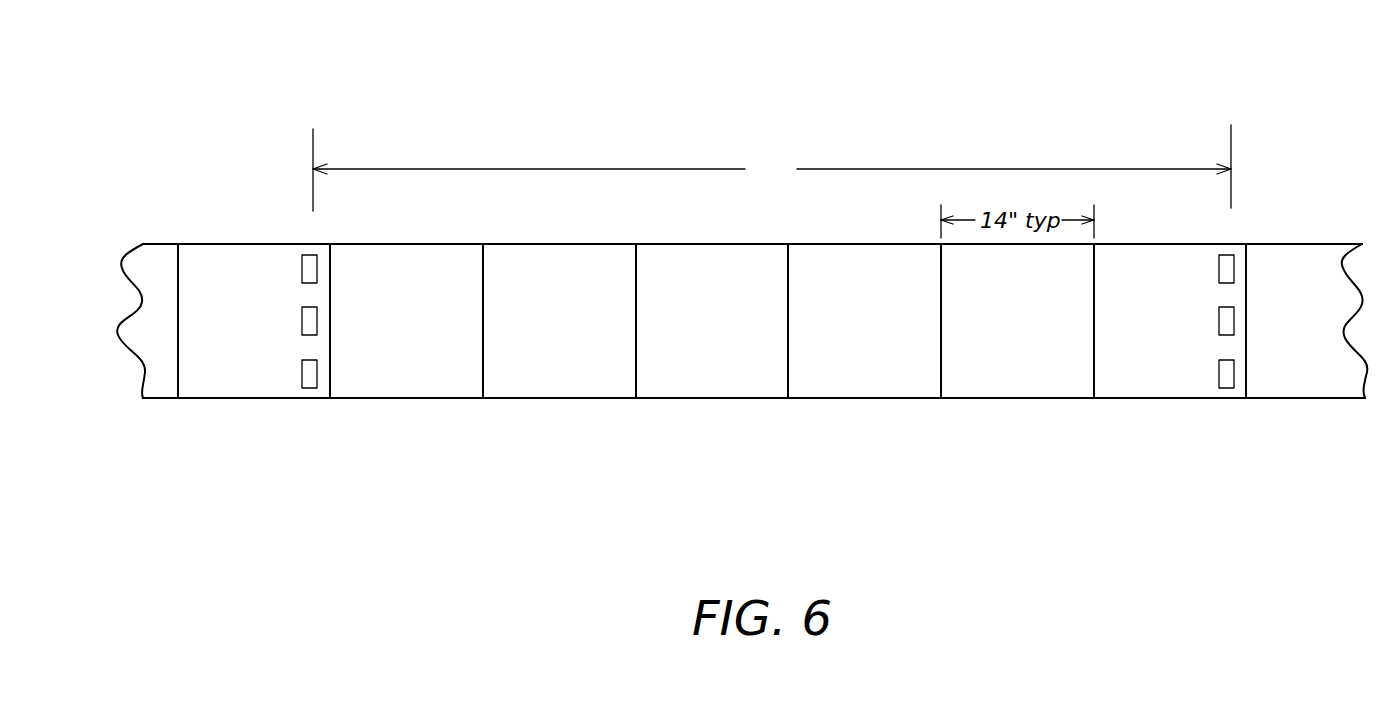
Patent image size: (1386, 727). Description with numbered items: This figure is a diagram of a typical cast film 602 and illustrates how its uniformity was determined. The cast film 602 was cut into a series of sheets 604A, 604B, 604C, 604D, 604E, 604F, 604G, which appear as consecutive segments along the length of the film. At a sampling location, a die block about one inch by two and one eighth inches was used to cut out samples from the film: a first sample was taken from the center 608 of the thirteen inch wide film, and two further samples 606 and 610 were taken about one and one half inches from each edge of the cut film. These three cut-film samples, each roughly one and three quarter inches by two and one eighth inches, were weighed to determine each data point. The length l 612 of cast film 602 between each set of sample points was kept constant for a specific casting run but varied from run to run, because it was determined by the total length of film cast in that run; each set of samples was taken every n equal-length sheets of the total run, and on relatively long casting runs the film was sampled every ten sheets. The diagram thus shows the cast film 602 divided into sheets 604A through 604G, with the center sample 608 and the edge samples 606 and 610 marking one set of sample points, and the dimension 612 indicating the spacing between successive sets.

The cast film 602 is at (665, 143).
The sheet 604A is at (250, 399).
The sheet 604B is at (400, 399).
The sheet 604C is at (555, 399).
The sheet 604D is at (708, 399).
The sheet 604E is at (860, 399).
The sheet 604F is at (1013, 399).
The sheet 604G is at (1167, 399).
The edge sample 606 is at (310, 399).
The center sample 608 is at (302, 317).
The edge sample 610 is at (310, 255).
The length l 612 is at (772, 168).